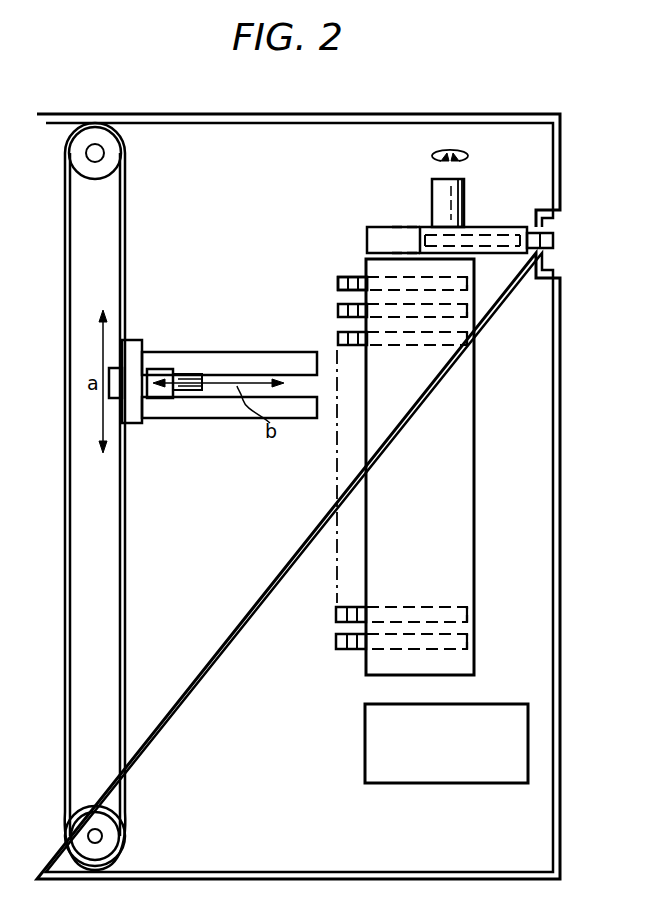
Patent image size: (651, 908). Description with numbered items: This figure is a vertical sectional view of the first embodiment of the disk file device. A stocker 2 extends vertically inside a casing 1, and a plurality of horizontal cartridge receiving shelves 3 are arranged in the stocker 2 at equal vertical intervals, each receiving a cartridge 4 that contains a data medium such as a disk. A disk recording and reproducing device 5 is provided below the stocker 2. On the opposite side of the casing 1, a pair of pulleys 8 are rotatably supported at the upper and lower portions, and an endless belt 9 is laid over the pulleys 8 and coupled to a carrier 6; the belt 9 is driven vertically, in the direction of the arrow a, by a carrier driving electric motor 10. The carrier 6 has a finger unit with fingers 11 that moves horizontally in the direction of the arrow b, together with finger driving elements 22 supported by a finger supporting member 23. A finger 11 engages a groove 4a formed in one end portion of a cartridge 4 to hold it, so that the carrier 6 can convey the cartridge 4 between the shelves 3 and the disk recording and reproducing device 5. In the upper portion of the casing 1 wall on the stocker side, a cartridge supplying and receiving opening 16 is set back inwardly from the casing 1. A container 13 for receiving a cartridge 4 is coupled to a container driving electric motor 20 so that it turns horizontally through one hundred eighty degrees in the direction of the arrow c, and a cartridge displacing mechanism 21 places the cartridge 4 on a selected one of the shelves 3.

The casing 1 is at (400, 114).
The stocker 2 is at (468, 494).
The cartridge receiving shelves 3 is at (467, 339).
The cartridges 4 is at (338, 339).
The groove 4a is at (352, 277).
The disk recording and reproducing device 5 is at (372, 737).
The carrier 6 is at (185, 352).
The pulleys 8 is at (117, 157).
The endless belt 9 is at (126, 660).
The carrier driving electric motor 10 is at (128, 818).
The fingers 11 is at (190, 391).
The container 13 is at (500, 228).
The cartridge supplying and receiving opening 16 is at (556, 229).
The container driving electric motor 20 is at (432, 198).
The cartridge displacing mechanism 21 is at (470, 220).
The finger driving elements 22 is at (169, 425).
The finger supporting member 23 is at (162, 399).